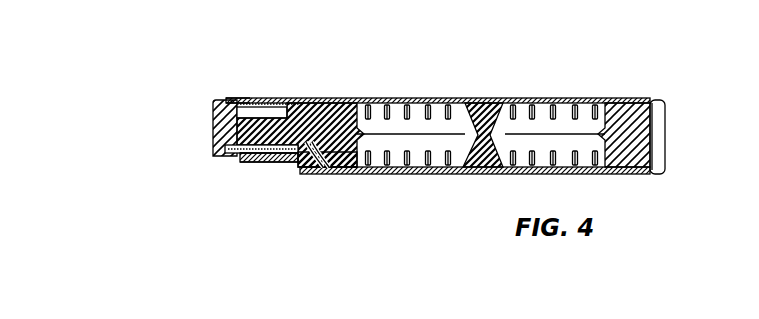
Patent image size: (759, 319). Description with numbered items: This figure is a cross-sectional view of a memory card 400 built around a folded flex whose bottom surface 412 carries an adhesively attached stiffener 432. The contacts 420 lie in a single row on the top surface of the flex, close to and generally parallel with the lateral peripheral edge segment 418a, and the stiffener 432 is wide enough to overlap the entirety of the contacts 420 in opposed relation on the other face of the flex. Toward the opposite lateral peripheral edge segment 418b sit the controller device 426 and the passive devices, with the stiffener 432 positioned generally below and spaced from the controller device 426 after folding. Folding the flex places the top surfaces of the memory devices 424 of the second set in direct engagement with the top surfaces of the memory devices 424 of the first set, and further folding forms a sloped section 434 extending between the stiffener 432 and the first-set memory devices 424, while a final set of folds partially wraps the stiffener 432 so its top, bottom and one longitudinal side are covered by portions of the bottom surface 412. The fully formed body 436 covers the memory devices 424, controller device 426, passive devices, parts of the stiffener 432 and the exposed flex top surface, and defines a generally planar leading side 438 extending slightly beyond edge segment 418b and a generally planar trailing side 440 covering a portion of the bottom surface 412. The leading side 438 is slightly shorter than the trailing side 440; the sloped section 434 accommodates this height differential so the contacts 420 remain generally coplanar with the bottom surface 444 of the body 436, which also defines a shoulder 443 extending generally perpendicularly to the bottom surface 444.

The memory card 400 is at (641, 64).
The bottom surface 412 is at (423, 175).
The lateral peripheral edge segment 418a is at (299, 171).
The lateral peripheral edge segment 418b is at (224, 99).
The contacts 420 is at (257, 161).
The memory devices 424 is at (420, 147).
The controller device 426 is at (267, 112).
The stiffener 432 is at (213, 118).
The sloped section 434 is at (313, 171).
The body 436 is at (330, 110).
The leading side 438 is at (212, 142).
The trailing side 440 is at (663, 157).
The shoulder 443 is at (283, 163).
The bottom surface 444 is at (212, 158).